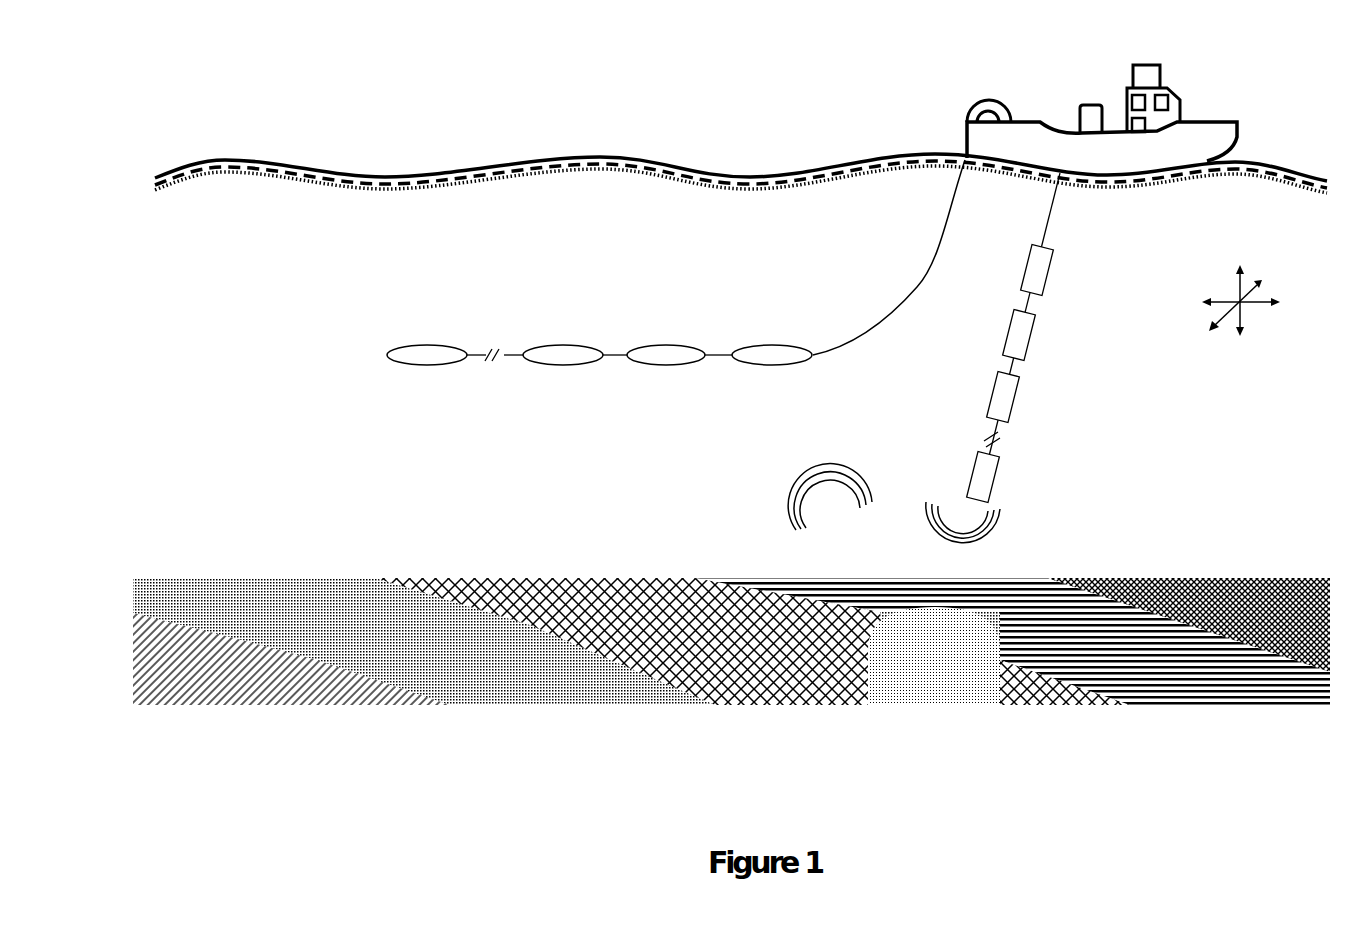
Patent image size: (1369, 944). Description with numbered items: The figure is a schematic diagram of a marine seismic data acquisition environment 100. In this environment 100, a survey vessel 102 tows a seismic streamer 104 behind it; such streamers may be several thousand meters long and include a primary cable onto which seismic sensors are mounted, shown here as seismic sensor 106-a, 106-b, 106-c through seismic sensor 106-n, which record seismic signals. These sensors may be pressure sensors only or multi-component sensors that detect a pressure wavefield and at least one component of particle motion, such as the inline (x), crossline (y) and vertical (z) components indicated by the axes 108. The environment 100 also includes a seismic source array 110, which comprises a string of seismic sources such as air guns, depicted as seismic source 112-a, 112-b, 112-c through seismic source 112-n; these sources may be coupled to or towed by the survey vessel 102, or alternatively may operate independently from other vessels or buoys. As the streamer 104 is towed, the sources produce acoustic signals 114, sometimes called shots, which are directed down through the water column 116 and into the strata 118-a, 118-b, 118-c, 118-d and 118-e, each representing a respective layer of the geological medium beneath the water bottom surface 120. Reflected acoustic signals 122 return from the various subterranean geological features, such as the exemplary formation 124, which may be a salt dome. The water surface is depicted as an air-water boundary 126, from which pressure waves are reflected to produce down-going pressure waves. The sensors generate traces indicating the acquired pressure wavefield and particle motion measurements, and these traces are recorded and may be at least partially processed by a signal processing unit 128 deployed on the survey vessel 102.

The marine seismic data acquisition environment 100 is at (478, 79).
The survey vessel 102 is at (1128, 111).
The seismic streamer 104 is at (907, 282).
The seismic sensor 106-a is at (783, 319).
The seismic sensor 106-b is at (665, 319).
The seismic sensor 106-c is at (563, 319).
The seismic sensor 106-n is at (437, 319).
The axes 108 is at (1266, 227).
The seismic source array 110 is at (1047, 228).
The seismic source 112-a is at (1050, 277).
The seismic source 112-b is at (1030, 340).
The seismic source 112-c is at (1012, 402).
The seismic source 112-n is at (988, 492).
The acoustic signals 114 is at (937, 465).
The water column 116 is at (926, 558).
The stratum 118-a is at (291, 659).
The stratum 118-b is at (731, 641).
The stratum 118-c is at (752, 641).
The stratum 118-d is at (1010, 641).
The stratum 118-e is at (1188, 625).
The water bottom surface 120 is at (731, 619).
The reflected acoustic signals 122 is at (815, 465).
The formation 124 is at (934, 656).
The air-water boundary 126 is at (626, 146).
The signal processing unit 128 is at (1090, 85).